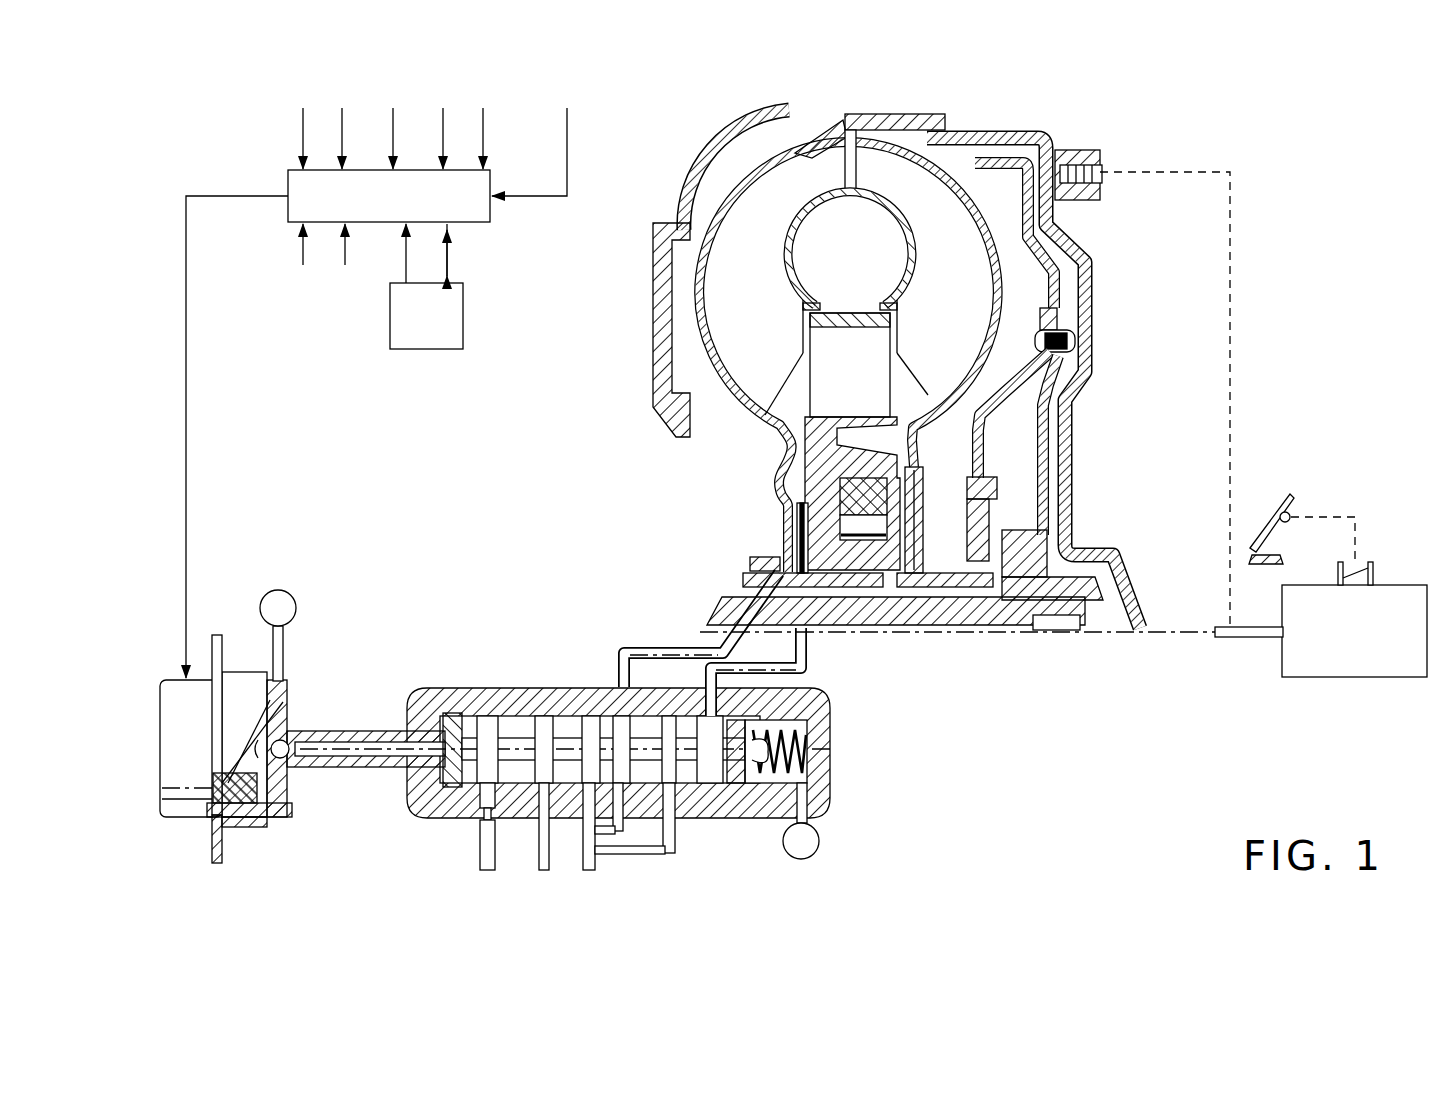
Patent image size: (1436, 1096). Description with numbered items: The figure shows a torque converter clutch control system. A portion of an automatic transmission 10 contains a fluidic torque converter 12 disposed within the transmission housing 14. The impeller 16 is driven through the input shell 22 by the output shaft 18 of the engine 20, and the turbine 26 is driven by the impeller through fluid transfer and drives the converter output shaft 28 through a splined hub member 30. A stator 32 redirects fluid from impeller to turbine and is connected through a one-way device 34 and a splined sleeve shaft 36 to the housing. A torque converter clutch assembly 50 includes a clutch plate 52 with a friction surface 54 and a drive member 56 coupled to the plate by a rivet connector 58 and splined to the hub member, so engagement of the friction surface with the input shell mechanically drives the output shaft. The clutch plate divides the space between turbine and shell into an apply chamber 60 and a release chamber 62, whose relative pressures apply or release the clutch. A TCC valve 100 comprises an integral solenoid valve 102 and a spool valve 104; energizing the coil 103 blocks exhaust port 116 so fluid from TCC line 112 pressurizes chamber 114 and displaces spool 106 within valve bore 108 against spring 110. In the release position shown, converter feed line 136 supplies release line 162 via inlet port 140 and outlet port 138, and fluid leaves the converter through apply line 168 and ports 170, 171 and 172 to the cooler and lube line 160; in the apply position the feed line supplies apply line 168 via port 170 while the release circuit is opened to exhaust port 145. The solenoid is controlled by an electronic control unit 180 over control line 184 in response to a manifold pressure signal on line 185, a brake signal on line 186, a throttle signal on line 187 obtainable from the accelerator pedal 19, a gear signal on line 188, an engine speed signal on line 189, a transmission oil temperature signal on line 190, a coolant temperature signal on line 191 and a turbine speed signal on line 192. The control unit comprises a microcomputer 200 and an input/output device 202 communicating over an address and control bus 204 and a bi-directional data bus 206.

The transmission 10 is at (921, 388).
The fluidic torque converter 12 is at (932, 111).
The transmission housing 14 is at (706, 163).
The impeller 16 is at (772, 162).
The output shaft 18 is at (1262, 640).
The accelerator pedal 19 is at (1272, 520).
The engine 20 is at (1358, 677).
The input shell 22 is at (1042, 142).
The turbine 26 is at (1003, 268).
The torque converter output shaft 28 is at (890, 600).
The splined hub member 30 is at (960, 600).
The stator 32 is at (865, 345).
The one-way device 34 is at (822, 494).
The splined sleeve shaft 36 is at (820, 590).
The torque converter clutch assembly 50 is at (975, 398).
The clutch plate 52 is at (1052, 262).
The friction surface 54 is at (1024, 200).
The drive member 56 is at (995, 415).
The rivet connector 58 is at (1062, 338).
The apply chamber 60 is at (1045, 292).
The release chamber 62 is at (1085, 396).
The TCC valve 100 is at (581, 711).
The solenoid valve 102 is at (262, 734).
The coil 103 is at (245, 810).
The spool valve 104 is at (565, 681).
The spool 106 is at (485, 738).
The valve bore 108 is at (510, 738).
The spring 110 is at (805, 752).
The TCC line 112 is at (478, 852).
The chamber 114 is at (405, 770).
The exhaust port 116 is at (275, 655).
The converter feed line 136 is at (540, 862).
The outlet port 138 is at (700, 698).
The inlet port 140 is at (777, 841).
The exhaust port 145 is at (808, 800).
The cooler and lube line 160 is at (597, 865).
The release line 162 is at (806, 640).
The apply line 168 is at (673, 648).
The port 170 is at (595, 722).
The port 171 is at (640, 812).
The port 172 is at (560, 835).
The electronic control unit 180 is at (393, 379).
The control line 184 is at (186, 545).
The MAP signal line 185 is at (556, 200).
The brake signal line 186 is at (303, 110).
The engine throttle signal line 187 is at (342, 124).
The transmission gear signal line 188 is at (393, 140).
The engine speed signal line 189 is at (443, 122).
The transmission oil temperature signal line 190 is at (488, 145).
The coolant temperature signal line 191 is at (300, 258).
The turbine speed signal line 192 is at (347, 258).
The microcomputer 200 is at (417, 349).
The input/output device 202 is at (297, 207).
The address and control bus 204 is at (410, 255).
The bi-directional data bus 206 is at (450, 262).